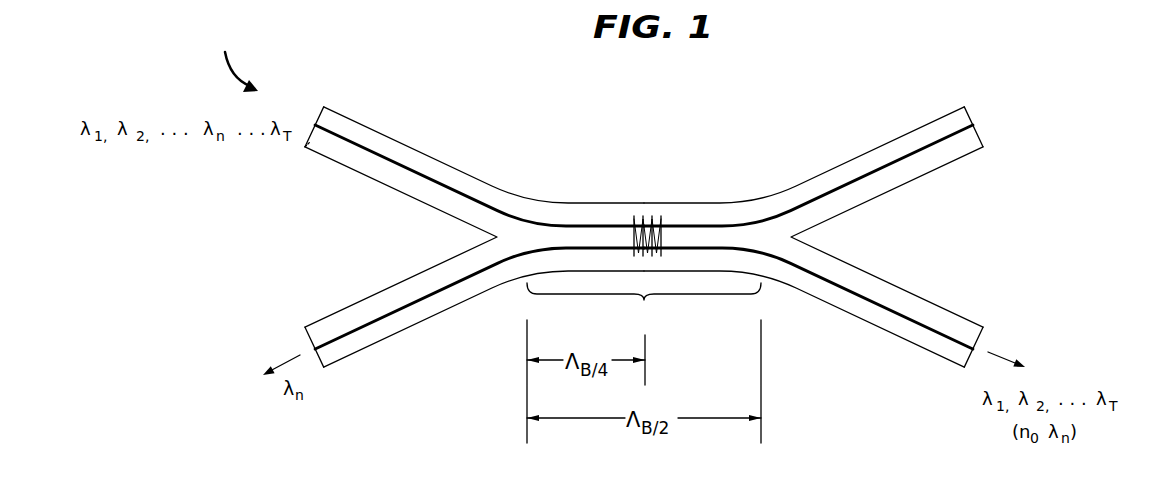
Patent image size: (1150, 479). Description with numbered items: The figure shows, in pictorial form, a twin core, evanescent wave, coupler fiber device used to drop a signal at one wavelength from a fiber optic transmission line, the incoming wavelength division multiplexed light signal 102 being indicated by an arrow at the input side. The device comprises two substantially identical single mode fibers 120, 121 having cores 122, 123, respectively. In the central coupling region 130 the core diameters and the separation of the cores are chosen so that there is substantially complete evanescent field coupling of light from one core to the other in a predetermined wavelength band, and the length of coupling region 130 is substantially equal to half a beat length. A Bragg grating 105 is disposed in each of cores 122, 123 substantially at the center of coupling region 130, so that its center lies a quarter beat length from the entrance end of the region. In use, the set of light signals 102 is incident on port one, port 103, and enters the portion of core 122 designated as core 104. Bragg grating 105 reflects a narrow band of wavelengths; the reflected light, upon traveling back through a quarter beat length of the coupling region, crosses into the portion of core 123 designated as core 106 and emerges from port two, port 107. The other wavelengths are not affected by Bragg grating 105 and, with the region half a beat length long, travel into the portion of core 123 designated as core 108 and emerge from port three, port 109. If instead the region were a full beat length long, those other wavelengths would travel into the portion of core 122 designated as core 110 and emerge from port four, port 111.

The input multiwavelength optical signal 102 is at (236, 57).
The port one 103 is at (337, 113).
The core 104 is at (484, 190).
The Bragg grating 105 is at (647, 215).
The core 106 is at (427, 297).
The port two 107 is at (370, 352).
The core 108 is at (835, 285).
The port three 109 is at (927, 353).
The core 110 is at (927, 140).
The port four 111 is at (868, 148).
The single mode fiber 120 is at (430, 158).
The single mode fiber 121 is at (367, 298).
The core 122 is at (820, 177).
The core 123 is at (892, 305).
The coupling region 130 is at (644, 307).